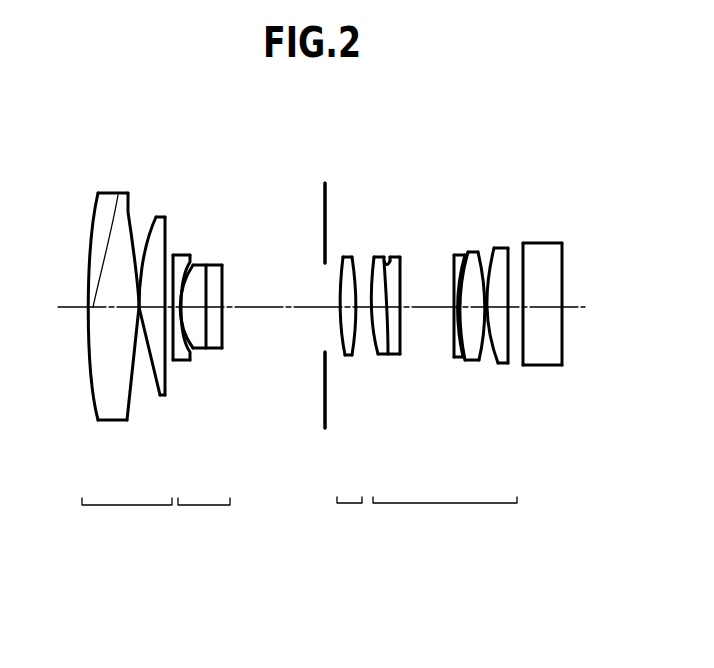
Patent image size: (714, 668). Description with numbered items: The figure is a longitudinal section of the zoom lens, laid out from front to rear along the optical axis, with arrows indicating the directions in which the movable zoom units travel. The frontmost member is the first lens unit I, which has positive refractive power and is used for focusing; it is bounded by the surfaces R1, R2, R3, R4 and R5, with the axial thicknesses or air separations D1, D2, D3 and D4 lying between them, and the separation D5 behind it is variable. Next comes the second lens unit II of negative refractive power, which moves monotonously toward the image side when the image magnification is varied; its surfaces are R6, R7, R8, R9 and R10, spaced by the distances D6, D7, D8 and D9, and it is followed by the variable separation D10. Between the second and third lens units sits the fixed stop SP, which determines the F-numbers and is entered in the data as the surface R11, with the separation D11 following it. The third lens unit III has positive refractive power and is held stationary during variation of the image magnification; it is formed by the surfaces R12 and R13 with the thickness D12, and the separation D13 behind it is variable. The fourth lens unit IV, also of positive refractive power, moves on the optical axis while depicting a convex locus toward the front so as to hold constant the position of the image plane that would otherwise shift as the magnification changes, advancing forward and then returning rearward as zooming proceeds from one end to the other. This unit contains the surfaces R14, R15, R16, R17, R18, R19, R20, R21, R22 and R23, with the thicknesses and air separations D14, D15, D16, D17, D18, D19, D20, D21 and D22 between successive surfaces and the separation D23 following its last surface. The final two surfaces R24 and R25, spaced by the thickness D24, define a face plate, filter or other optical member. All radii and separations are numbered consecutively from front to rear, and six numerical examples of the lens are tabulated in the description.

The first surface radius of curvature R1 is at (96, 212).
The second surface radius of curvature R2 is at (118, 195).
The third surface radius of curvature R3 is at (130, 216).
The fourth surface radius of curvature R4 is at (155, 216).
The fifth surface radius of curvature R5 is at (164, 216).
The sixth surface radius of curvature R6 is at (173, 255).
The seventh surface radius of curvature R7 is at (189, 256).
The eighth surface radius of curvature R8 is at (193, 264).
The ninth surface radius of curvature R9 is at (205, 264).
The tenth surface radius of curvature R10 is at (222, 265).
The stop surface R11 is at (324, 186).
The twelfth surface radius of curvature R12 is at (343, 258).
The thirteenth surface radius of curvature R13 is at (353, 257).
The fourteenth surface radius of curvature R14 is at (373, 258).
The fifteenth surface radius of curvature R15 is at (385, 259).
The sixteenth surface radius of curvature R16 is at (393, 259).
The seventeenth surface radius of curvature R17 is at (402, 258).
The eighteenth surface radius of curvature R18 is at (454, 257).
The nineteenth surface radius of curvature R19 is at (465, 255).
The twentieth surface radius of curvature R20 is at (469, 252).
The twenty-first surface radius of curvature R21 is at (479, 252).
The twenty-second surface radius of curvature R22 is at (495, 249).
The twenty-third surface radius of curvature R23 is at (509, 249).
The face plate front surface R24 is at (525, 257).
The face plate rear surface R25 is at (557, 254).
The first axial thickness D1 is at (93, 307).
The second axial thickness D2 is at (138, 310).
The third air separation D3 is at (153, 310).
The fourth axial thickness D4 is at (169, 310).
The fifth air separation D5 is at (184, 310).
The sixth axial thickness D6 is at (189, 318).
The seventh air separation D7 is at (196, 315).
The eighth axial thickness D8 is at (206, 315).
The ninth axial thickness D9 is at (217, 310).
The tenth air separation D10 is at (268, 310).
The eleventh air separation D11 is at (335, 310).
The twelfth axial thickness D12 is at (347, 310).
The thirteenth air separation D13 is at (362, 310).
The fourteenth axial thickness D14 is at (378, 310).
The fifteenth air separation D15 is at (392, 310).
The sixteenth axial thickness D16 is at (407, 310).
The seventeenth air separation D17 is at (423, 310).
The eighteenth axial thickness D18 is at (455, 310).
The nineteenth air separation D19 is at (470, 310).
The twentieth axial thickness D20 is at (485, 310).
The twenty-first air separation D21 is at (500, 312).
The twenty-second axial thickness D22 is at (518, 312).
The twenty-third air separation D23 is at (539, 312).
The twenty-fourth axial thickness D24 is at (553, 312).
The fixed stop SP is at (323, 408).
The first lens unit I is at (127, 515).
The second lens unit II is at (255, 622).
The third lens unit III is at (348, 515).
The fourth lens unit IV is at (437, 613).